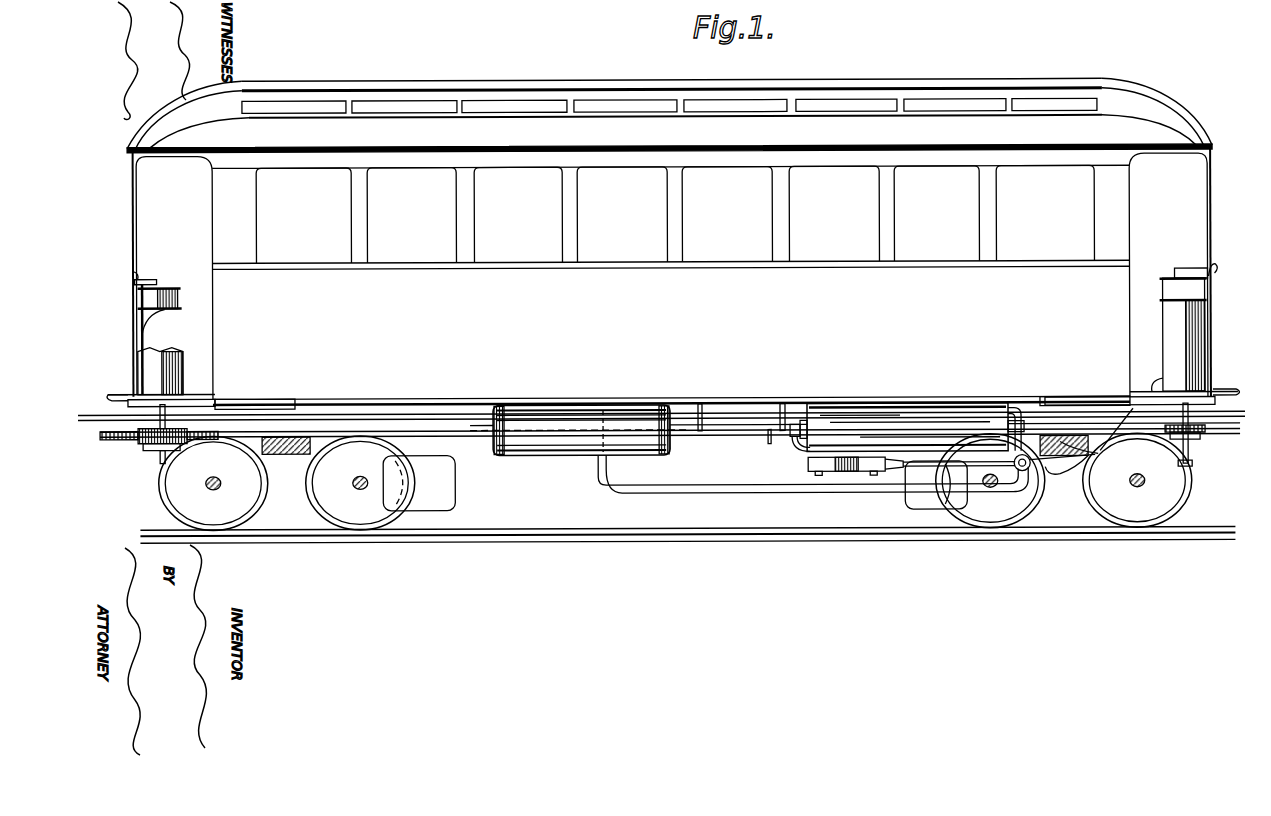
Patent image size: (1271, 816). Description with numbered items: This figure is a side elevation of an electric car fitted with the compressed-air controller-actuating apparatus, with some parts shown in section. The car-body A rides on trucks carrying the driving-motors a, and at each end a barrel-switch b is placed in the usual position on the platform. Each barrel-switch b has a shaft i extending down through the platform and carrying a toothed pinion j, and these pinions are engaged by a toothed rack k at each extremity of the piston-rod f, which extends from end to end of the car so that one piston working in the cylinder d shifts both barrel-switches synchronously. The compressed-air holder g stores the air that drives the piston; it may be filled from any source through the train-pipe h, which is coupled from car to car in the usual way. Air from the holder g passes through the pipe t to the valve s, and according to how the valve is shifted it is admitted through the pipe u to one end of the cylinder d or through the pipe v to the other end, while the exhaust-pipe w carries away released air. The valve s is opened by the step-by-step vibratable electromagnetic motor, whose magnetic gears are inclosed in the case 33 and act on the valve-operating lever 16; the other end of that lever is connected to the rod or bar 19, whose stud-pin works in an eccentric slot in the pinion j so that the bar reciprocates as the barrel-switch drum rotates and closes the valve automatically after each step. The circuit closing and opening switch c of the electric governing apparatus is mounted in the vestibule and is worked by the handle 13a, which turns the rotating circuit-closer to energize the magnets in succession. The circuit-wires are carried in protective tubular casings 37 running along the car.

The car-body A is at (672, 244).
The driving-motors a is at (448, 479).
The barrel-switches b is at (183, 358).
The circuit closing and opening switch c is at (180, 297).
The cylinder d is at (810, 448).
The piston-rod f is at (480, 437).
The compressed-air holder g is at (568, 453).
The train-pipe h is at (700, 421).
The barrel-switch shaft i is at (130, 437).
The toothed pinion j is at (150, 446).
The toothed rack k is at (100, 436).
The valve s is at (1032, 472).
The pipe t is at (775, 496).
The pipe u is at (1015, 405).
The pipe v is at (1005, 443).
The exhaust-pipe w is at (1048, 458).
The valve-operating lever 16 is at (934, 484).
The rod or bar 19 is at (1192, 467).
The case 33 is at (850, 473).
The protective tubular casings 37 is at (120, 384).
The handle 13a is at (1214, 275).